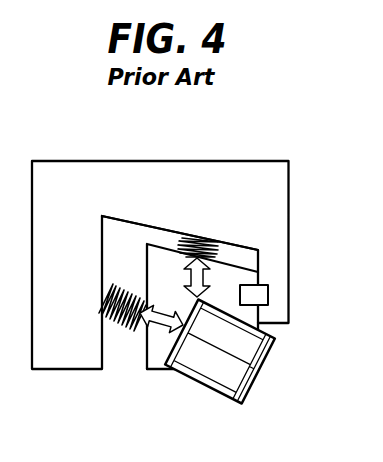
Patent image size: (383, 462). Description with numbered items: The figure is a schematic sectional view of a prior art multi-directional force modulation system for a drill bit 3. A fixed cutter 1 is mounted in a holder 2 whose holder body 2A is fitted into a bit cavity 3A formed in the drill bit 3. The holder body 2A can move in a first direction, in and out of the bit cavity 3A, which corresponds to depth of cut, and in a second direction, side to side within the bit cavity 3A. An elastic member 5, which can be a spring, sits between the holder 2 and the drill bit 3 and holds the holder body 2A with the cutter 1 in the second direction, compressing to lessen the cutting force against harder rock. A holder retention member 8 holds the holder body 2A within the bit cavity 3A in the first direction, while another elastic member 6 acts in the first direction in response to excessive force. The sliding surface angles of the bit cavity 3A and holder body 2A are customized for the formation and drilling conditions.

The fixed cutter 1 is at (215, 378).
The holder 2 is at (242, 279).
The holder body 2A is at (158, 357).
The drill bit 3 is at (183, 170).
The bit cavity 3A is at (123, 243).
The elastic member 5 is at (123, 330).
The another elastic member 6 is at (236, 244).
The holder retention member 8 is at (268, 288).